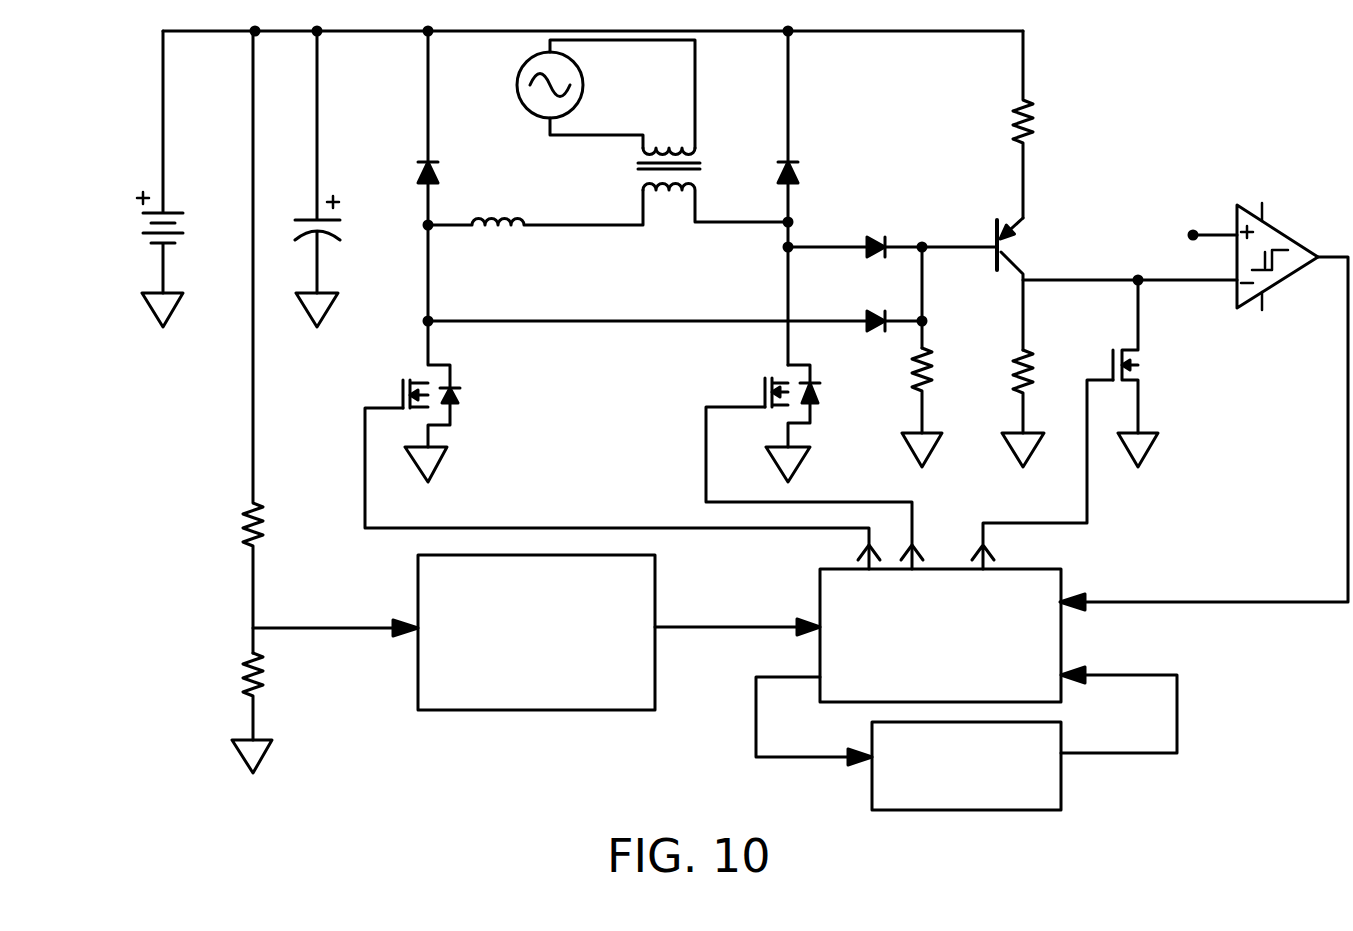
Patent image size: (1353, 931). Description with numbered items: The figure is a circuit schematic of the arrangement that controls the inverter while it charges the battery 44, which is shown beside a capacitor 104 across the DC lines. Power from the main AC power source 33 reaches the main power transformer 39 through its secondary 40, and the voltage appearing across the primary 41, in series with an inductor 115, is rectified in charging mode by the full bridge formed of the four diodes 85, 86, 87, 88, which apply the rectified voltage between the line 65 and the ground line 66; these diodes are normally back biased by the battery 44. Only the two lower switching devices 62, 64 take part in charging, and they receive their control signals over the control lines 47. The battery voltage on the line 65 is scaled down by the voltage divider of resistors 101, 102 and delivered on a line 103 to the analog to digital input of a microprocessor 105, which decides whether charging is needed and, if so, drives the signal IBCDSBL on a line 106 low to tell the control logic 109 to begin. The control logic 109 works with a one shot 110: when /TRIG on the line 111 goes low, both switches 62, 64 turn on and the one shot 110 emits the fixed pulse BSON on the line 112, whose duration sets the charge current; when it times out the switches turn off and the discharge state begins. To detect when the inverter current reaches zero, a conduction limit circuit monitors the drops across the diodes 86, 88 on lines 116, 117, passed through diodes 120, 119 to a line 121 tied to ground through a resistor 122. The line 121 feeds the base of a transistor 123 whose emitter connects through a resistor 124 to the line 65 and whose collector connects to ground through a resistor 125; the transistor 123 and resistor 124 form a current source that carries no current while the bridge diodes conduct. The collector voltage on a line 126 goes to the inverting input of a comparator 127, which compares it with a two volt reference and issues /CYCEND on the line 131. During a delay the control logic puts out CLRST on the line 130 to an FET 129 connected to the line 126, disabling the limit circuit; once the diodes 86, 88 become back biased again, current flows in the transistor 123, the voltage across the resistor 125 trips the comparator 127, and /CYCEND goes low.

The main AC power source 33 is at (585, 95).
The main power transformer 39 is at (678, 182).
The secondary 40 is at (640, 148).
The primary 41 is at (642, 182).
The battery 44 is at (165, 213).
The control lines 47 is at (690, 528).
The switching device 62 is at (408, 378).
The switching device 64 is at (770, 377).
The line 65 is at (192, 32).
The ground line 66 is at (1160, 442).
The diode 85 is at (457, 398).
The diode 86 is at (795, 172).
The diode 87 is at (823, 400).
The diode 88 is at (438, 173).
The resistor 101 is at (242, 522).
The resistor 102 is at (243, 675).
The line 103 is at (285, 625).
The capacitor 104 is at (340, 222).
The microprocessor 105 is at (513, 710).
The line 106 is at (750, 630).
The control logic 109 is at (1060, 622).
The one shot 110 is at (1007, 810).
The line 111 is at (753, 705).
The line 112 is at (1180, 725).
The inductor 115 is at (492, 227).
The line 116 is at (537, 321).
The line 117 is at (795, 250).
The diode 119 is at (890, 240).
The diode 120 is at (878, 323).
The line 121 is at (953, 250).
The resistor 122 is at (928, 378).
The transistor 123 is at (1017, 230).
The resistor 124 is at (1015, 118).
The resistor 125 is at (1033, 378).
The line 126 is at (1043, 282).
The comparator 127 is at (1277, 225).
The FET 129 is at (1138, 368).
The line 130 is at (1088, 467).
The line 131 is at (1348, 460).